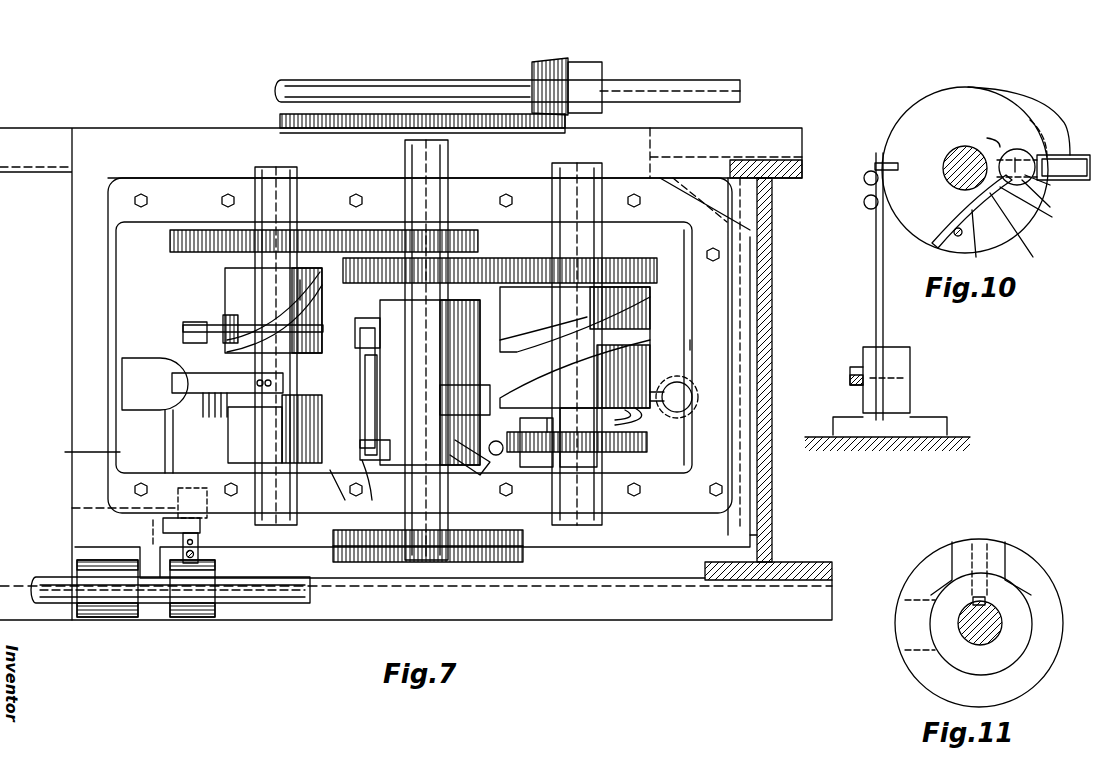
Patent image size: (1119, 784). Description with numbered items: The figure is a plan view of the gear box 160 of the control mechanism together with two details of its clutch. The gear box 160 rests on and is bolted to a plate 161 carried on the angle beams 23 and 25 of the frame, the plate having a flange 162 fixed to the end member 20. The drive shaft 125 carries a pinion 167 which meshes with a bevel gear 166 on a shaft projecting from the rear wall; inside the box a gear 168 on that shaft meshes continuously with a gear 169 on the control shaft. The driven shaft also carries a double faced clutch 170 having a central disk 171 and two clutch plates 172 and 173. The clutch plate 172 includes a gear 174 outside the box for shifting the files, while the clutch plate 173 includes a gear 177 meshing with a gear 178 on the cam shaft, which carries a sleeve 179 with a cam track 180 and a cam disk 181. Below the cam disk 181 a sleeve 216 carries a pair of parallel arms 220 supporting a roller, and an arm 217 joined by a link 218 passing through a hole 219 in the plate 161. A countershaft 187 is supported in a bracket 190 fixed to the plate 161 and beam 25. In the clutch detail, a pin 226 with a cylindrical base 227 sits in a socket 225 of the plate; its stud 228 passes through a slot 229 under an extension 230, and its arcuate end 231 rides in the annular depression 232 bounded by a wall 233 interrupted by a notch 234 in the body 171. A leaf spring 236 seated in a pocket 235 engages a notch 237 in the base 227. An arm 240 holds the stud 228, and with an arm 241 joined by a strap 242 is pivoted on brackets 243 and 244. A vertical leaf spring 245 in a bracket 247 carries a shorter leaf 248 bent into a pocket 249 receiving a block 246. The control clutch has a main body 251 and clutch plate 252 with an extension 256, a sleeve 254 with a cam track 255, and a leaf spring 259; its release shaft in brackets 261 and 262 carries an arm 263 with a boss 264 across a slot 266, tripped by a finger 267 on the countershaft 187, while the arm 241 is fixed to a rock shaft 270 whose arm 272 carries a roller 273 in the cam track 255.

In FIG. 7, the end member 20 is at (772, 320).
In FIG. 7, the angle beam 23 is at (726, 331).
In FIG. 7, the angle beam 25 is at (600, 612).
In FIG. 7, the drive shaft 125 is at (685, 78).
In FIG. 7, the gear box 160 is at (772, 378).
In FIG. 7, the plate 161 is at (62, 484).
In FIG. 7, the flange 162 is at (772, 490).
In FIG. 7, the bevel gear 166 is at (466, 133).
In FIG. 7, the pinion 167 is at (532, 70).
In FIG. 7, the gear 168 is at (478, 241).
In FIG. 7, the gear 169 is at (178, 232).
In FIG. 7, the double faced clutch 170 is at (490, 388).
In FIG. 7, the central disk 171 is at (387, 417).
In FIG. 11, the central disk 171 is at (928, 580).
In FIG. 7, the clutch plate 172 is at (405, 475).
In FIG. 10, the clutch plate 172 is at (995, 250).
In FIG. 7, the clutch plate 173 is at (383, 258).
In FIG. 7, the gear 174 is at (428, 554).
In FIG. 7, the gear 177 is at (575, 319).
In FIG. 7, the gear 178 is at (630, 250).
In FIG. 7, the sleeve 179 is at (650, 352).
In FIG. 7, the cam track 180 is at (545, 352).
In FIG. 7, the cam disk 181 is at (635, 456).
In FIG. 7, the countershaft 187 is at (292, 603).
In FIG. 7, the bracket 190 is at (82, 552).
In FIG. 7, the sleeve 216 is at (540, 432).
In FIG. 7, the arm 217 is at (628, 416).
In FIG. 7, the link 218 is at (685, 388).
In FIG. 7, the hole 219 is at (682, 372).
In FIG. 7, the parallel arms 220 is at (517, 437).
In FIG. 10, the socket 225 is at (1030, 145).
In FIG. 10, the pin 226 is at (1055, 188).
In FIG. 10, the base 227 is at (1015, 150).
In FIG. 10, the stud 228 is at (1043, 167).
In FIG. 10, the slot 229 is at (1052, 202).
In FIG. 7, the extension 230 is at (380, 312).
In FIG. 10, the extension 230 is at (1050, 140).
In FIG. 10, the end 231 is at (987, 138).
In FIG. 11, the annular central depression 232 is at (1012, 598).
In FIG. 11, the wall 233 is at (935, 675).
In FIG. 11, the notch 234 is at (995, 560).
In FIG. 10, the pocket 235 is at (1035, 226).
In FIG. 10, the leaf spring 236 is at (958, 242).
In FIG. 10, the notch 237 is at (1030, 225).
In FIG. 7, the arm 240 is at (349, 488).
In FIG. 7, the arm 241 is at (375, 360).
In FIG. 7, the strap 242 is at (440, 392).
In FIG. 7, the bracket 243 is at (323, 485).
In FIG. 7, the bracket 244 is at (370, 326).
In FIG. 10, the leaf spring 245 is at (876, 278).
In FIG. 10, the block 246 is at (900, 165).
In FIG. 7, the bracket 247 is at (500, 470).
In FIG. 10, the bracket 247 is at (900, 355).
In FIG. 10, the shorter leaf 248 is at (862, 186).
In FIG. 10, the pocket 249 is at (880, 160).
In FIG. 7, the main body 251 is at (232, 445).
In FIG. 7, the clutch plate 252 is at (228, 410).
In FIG. 7, the sleeve 254 is at (225, 270).
In FIG. 7, the cam track 255 is at (290, 288).
In FIG. 7, the extension 256 is at (320, 405).
In FIG. 7, the leaf spring 259 is at (190, 372).
In FIG. 7, the bracket 261 is at (180, 410).
In FIG. 7, the bracket 262 is at (300, 414).
In FIG. 7, the arm 263 is at (71, 452).
In FIG. 7, the boss 264 is at (98, 508).
In FIG. 7, the slot 266 is at (200, 525).
In FIG. 7, the finger 267 is at (200, 554).
In FIG. 7, the rock shaft 270 is at (370, 338).
In FIG. 7, the arm 272 is at (183, 328).
In FIG. 7, the roller 273 is at (226, 316).